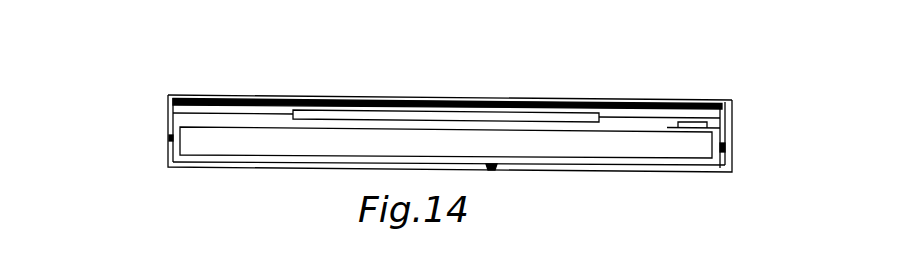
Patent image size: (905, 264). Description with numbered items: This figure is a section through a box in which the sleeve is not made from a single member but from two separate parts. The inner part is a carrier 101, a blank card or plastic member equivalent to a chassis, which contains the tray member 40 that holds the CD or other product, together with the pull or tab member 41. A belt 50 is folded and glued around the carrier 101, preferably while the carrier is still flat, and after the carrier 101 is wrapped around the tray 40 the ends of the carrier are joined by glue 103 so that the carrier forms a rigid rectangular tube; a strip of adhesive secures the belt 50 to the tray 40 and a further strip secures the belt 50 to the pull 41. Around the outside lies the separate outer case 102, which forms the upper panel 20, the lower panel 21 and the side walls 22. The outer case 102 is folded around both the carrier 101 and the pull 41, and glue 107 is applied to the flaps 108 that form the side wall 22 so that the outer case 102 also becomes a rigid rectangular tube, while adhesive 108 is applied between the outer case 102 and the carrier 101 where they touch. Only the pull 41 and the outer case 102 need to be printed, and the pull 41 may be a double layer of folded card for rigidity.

The upper panel 20 is at (610, 101).
The lower panel 21 is at (322, 169).
The side walls 22 is at (168, 108).
The tray member 40 is at (685, 148).
The pull member 41 is at (198, 106).
The belt 50 is at (313, 118).
The carrier 101 is at (578, 165).
The outer case 102 is at (250, 98).
The glue 103 is at (693, 122).
The glue 107 is at (728, 112).
The adhesive 108 is at (170, 140).